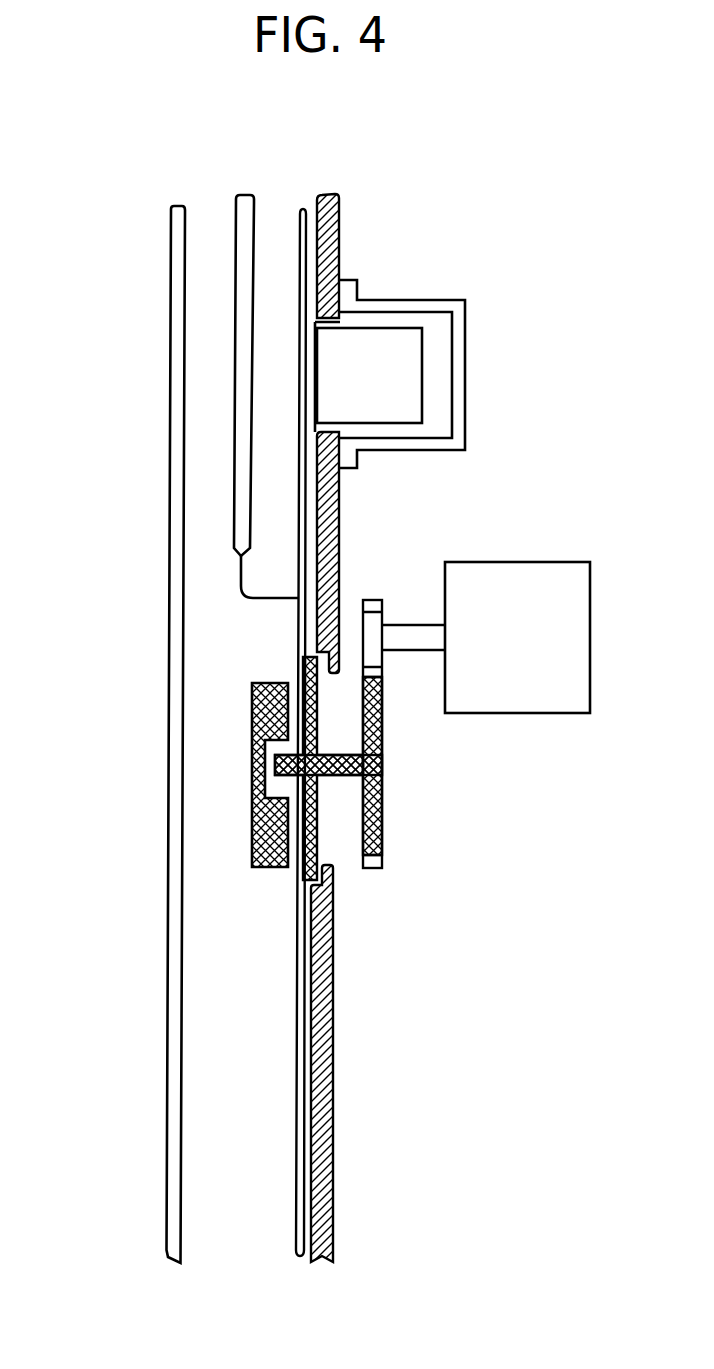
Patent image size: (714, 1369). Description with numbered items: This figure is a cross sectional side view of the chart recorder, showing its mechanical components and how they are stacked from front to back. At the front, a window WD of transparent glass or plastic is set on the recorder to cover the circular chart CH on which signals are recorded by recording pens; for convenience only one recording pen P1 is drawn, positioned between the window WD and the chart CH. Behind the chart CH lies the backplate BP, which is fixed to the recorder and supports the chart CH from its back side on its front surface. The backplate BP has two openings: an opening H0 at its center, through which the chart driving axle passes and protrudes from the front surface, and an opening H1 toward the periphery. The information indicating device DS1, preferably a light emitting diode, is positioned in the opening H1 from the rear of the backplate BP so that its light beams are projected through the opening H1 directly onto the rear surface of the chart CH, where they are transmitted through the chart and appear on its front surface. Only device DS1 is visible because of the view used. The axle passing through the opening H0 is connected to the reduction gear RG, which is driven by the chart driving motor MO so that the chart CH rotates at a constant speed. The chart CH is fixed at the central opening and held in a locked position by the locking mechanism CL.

The window WD is at (171, 329).
The recording pen P1 is at (247, 440).
The circular chart CH is at (298, 613).
The backplate BP is at (340, 533).
The opening H1 is at (375, 318).
The information indicating device DS1 is at (412, 375).
The chart driving motor MO is at (545, 562).
The reduction gears RG is at (383, 655).
The opening H0 is at (322, 843).
The locking mechanism CL is at (251, 810).